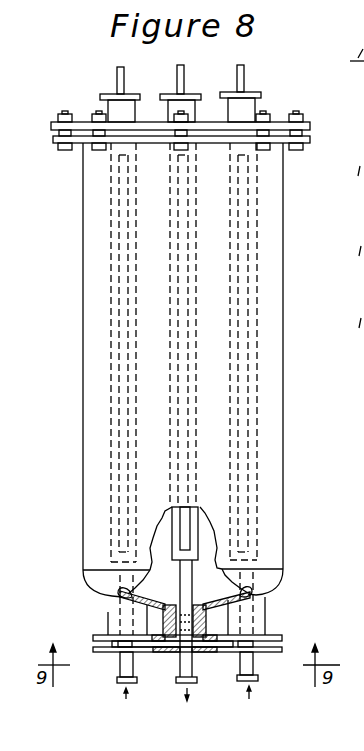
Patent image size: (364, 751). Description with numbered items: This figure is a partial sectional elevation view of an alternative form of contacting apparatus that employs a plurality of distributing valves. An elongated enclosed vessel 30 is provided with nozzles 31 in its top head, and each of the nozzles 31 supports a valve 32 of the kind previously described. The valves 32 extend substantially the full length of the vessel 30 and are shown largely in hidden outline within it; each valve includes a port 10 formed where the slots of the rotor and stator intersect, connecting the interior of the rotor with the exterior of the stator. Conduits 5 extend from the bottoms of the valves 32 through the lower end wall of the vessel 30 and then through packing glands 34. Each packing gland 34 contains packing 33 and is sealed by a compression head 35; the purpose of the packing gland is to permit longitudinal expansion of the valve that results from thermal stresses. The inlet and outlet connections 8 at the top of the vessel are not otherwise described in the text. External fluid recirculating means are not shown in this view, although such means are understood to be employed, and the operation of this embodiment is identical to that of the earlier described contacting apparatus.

The conduit 5 is at (125, 665).
The inlet/outlet pipes 8 is at (238, 80).
The port 10 is at (249, 519).
The vessel 30 is at (83, 393).
The nozzle 31 is at (117, 113).
The valve 32 is at (196, 243).
The packing 33 is at (172, 625).
The packing gland 34 is at (215, 637).
The compression head 35 is at (195, 653).